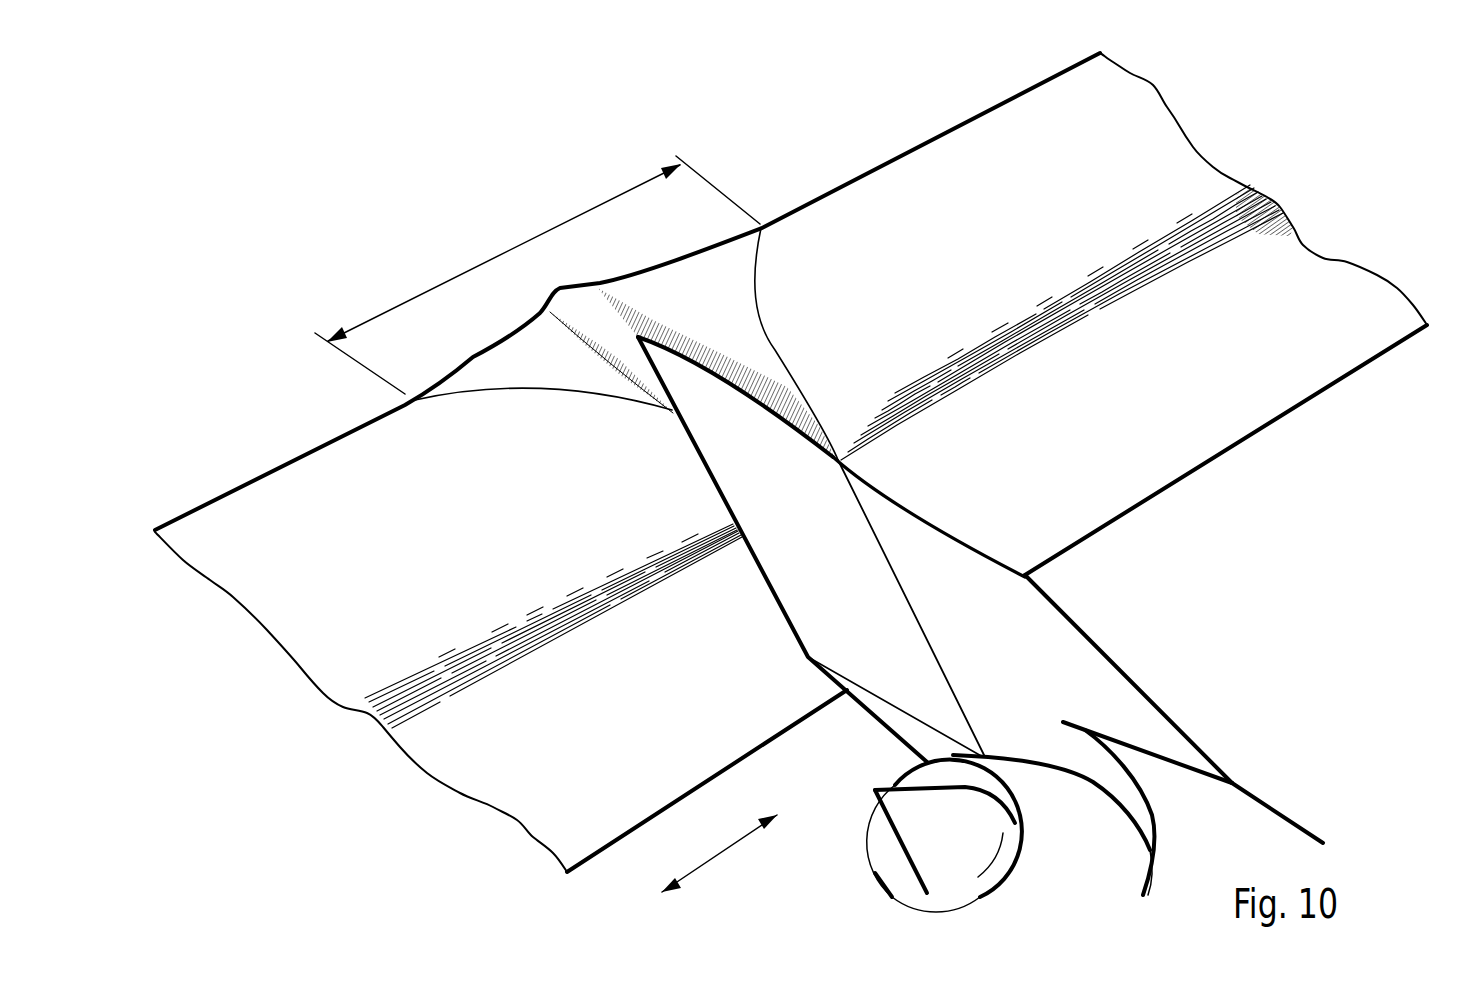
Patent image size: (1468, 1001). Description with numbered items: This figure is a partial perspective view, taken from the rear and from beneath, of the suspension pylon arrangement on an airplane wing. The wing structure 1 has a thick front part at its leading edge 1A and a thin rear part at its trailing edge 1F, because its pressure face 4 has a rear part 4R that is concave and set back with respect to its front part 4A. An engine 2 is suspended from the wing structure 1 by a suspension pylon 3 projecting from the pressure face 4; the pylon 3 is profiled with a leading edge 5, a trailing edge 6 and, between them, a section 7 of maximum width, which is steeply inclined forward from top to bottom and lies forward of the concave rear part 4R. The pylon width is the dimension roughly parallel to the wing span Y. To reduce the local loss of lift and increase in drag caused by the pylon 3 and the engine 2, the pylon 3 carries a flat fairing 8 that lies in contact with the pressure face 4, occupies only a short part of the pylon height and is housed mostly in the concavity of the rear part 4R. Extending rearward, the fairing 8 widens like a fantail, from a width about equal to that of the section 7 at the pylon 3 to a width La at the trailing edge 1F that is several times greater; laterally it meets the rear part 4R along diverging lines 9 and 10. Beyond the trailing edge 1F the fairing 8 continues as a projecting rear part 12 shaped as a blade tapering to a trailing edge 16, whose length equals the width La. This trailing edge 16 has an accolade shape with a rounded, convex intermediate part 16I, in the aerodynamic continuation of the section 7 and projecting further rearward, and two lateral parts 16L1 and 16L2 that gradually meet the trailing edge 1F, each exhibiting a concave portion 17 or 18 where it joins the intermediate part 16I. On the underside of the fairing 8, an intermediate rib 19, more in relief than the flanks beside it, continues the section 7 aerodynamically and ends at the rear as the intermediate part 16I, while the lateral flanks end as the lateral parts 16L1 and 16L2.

The wing structure 1 is at (1287, 183).
The leading edge 1A is at (1287, 418).
The trailing edge 1F is at (858, 176).
The engine 2 is at (1074, 820).
The suspension pylon 3 is at (1017, 673).
The pressure face 4 is at (1102, 190).
The front part of the pressure face 4A is at (1327, 312).
The rear part of the pressure face 4R is at (347, 550).
The leading edge of the pylon 5 is at (1167, 712).
The trailing edge of the pylon 6 is at (758, 567).
The section of maximum width 7 is at (930, 630).
The fairing 8 is at (553, 375).
The diverging line 9 is at (624, 400).
The diverging line 10 is at (783, 353).
The projecting rear part 12 is at (697, 262).
The trailing edge of the projecting rear part 16 is at (478, 358).
The intermediate part 16I is at (558, 288).
The lateral part 16L1 is at (513, 350).
The lateral part 16L2 is at (640, 271).
The concave portion 17 is at (513, 350).
The concave portion 18 is at (612, 282).
The intermediate rib 19 is at (603, 327).
The width of the fairing at the trailing edge La is at (455, 275).
The wing span Y is at (719, 853).